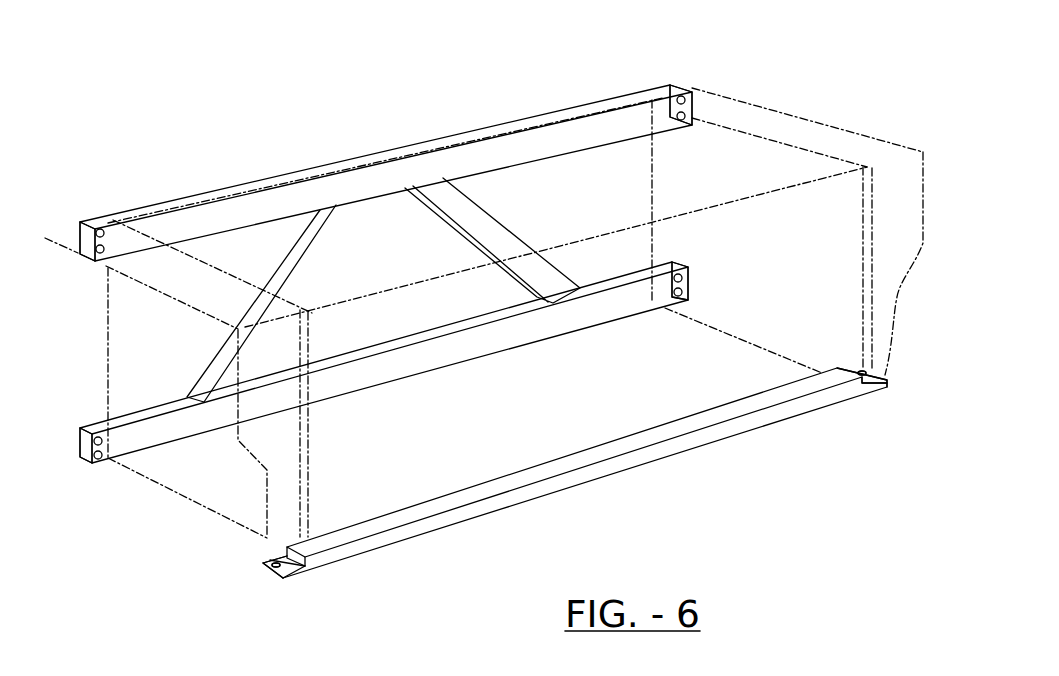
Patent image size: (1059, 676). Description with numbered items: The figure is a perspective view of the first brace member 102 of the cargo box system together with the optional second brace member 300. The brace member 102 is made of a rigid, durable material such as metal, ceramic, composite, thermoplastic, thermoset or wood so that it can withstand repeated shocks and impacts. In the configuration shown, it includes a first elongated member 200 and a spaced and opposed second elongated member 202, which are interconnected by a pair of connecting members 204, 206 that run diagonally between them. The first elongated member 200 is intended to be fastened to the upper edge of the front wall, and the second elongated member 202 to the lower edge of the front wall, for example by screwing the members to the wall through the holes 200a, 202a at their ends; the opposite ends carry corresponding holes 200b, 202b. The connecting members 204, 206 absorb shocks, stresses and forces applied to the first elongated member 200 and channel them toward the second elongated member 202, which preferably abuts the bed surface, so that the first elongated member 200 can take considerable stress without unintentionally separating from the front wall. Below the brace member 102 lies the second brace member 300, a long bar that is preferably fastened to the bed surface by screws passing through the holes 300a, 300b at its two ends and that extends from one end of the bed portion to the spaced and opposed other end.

The brace member 102 is at (210, 135).
The first elongated member 200 is at (392, 150).
The holes 200a is at (95, 232).
The second end of upper beam 200b is at (688, 101).
The second elongated member 202 is at (193, 438).
The holes 202a is at (95, 441).
The second end of lower beam 202b is at (688, 293).
The connecting member 204 is at (323, 268).
The connecting member 206 is at (495, 222).
The second brace member 300 is at (530, 508).
The holes 300a is at (284, 573).
The holes 300b is at (882, 373).